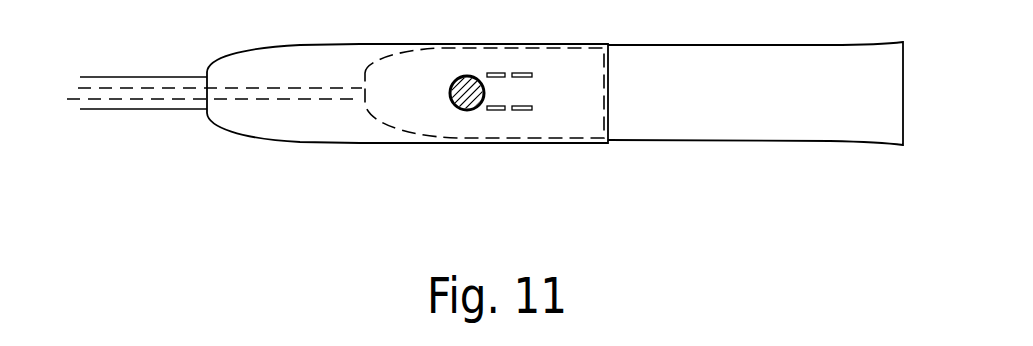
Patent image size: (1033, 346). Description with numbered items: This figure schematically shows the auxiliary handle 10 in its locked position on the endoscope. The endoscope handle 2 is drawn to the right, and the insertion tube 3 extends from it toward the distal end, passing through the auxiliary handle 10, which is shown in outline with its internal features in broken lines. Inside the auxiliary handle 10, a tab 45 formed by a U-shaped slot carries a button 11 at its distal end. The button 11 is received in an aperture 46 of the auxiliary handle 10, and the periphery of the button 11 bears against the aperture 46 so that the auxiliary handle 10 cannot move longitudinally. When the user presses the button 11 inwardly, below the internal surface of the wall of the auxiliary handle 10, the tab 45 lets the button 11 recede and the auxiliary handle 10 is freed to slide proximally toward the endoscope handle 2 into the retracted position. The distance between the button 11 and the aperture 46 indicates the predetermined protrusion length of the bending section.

The endoscope handle 2 is at (803, 163).
The insertion tube 3 is at (135, 112).
The auxiliary handle 10 is at (347, 145).
The button 11 is at (483, 107).
The tab 45 is at (522, 93).
The aperture 46 is at (465, 110).